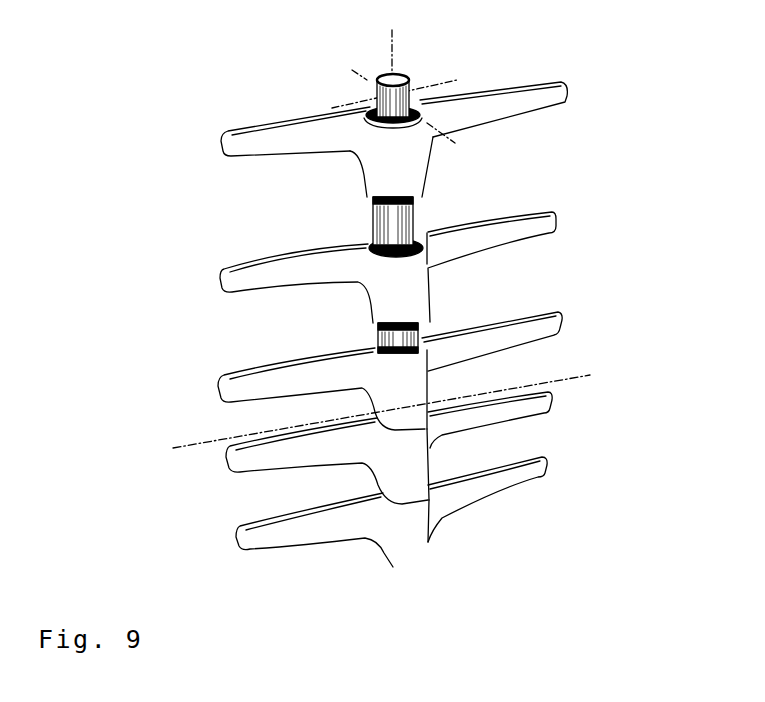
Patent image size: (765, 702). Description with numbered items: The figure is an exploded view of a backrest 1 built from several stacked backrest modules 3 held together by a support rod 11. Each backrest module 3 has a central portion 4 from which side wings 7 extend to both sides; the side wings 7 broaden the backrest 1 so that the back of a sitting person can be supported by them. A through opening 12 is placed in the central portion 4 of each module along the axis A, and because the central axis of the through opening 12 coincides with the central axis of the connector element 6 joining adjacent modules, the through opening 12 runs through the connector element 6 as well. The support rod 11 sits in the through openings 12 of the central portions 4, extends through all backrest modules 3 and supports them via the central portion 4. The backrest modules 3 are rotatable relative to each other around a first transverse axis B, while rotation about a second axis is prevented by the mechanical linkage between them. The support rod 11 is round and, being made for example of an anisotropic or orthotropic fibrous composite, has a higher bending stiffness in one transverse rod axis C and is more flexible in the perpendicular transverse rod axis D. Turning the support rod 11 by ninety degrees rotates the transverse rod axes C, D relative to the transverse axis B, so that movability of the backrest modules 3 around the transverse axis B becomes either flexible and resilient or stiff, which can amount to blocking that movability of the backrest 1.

The backrest 1 is at (124, 499).
The backrest module 3 is at (587, 110).
The central portion 4 is at (410, 163).
The connector element 6 is at (397, 212).
The side wing 7 is at (250, 137).
The support rod 11 is at (376, 82).
The through opening 12 is at (368, 109).
The axis A is at (399, 41).
The first transverse axis B is at (394, 400).
The transverse rod axis C is at (414, 117).
The transverse rod axis D is at (404, 87).